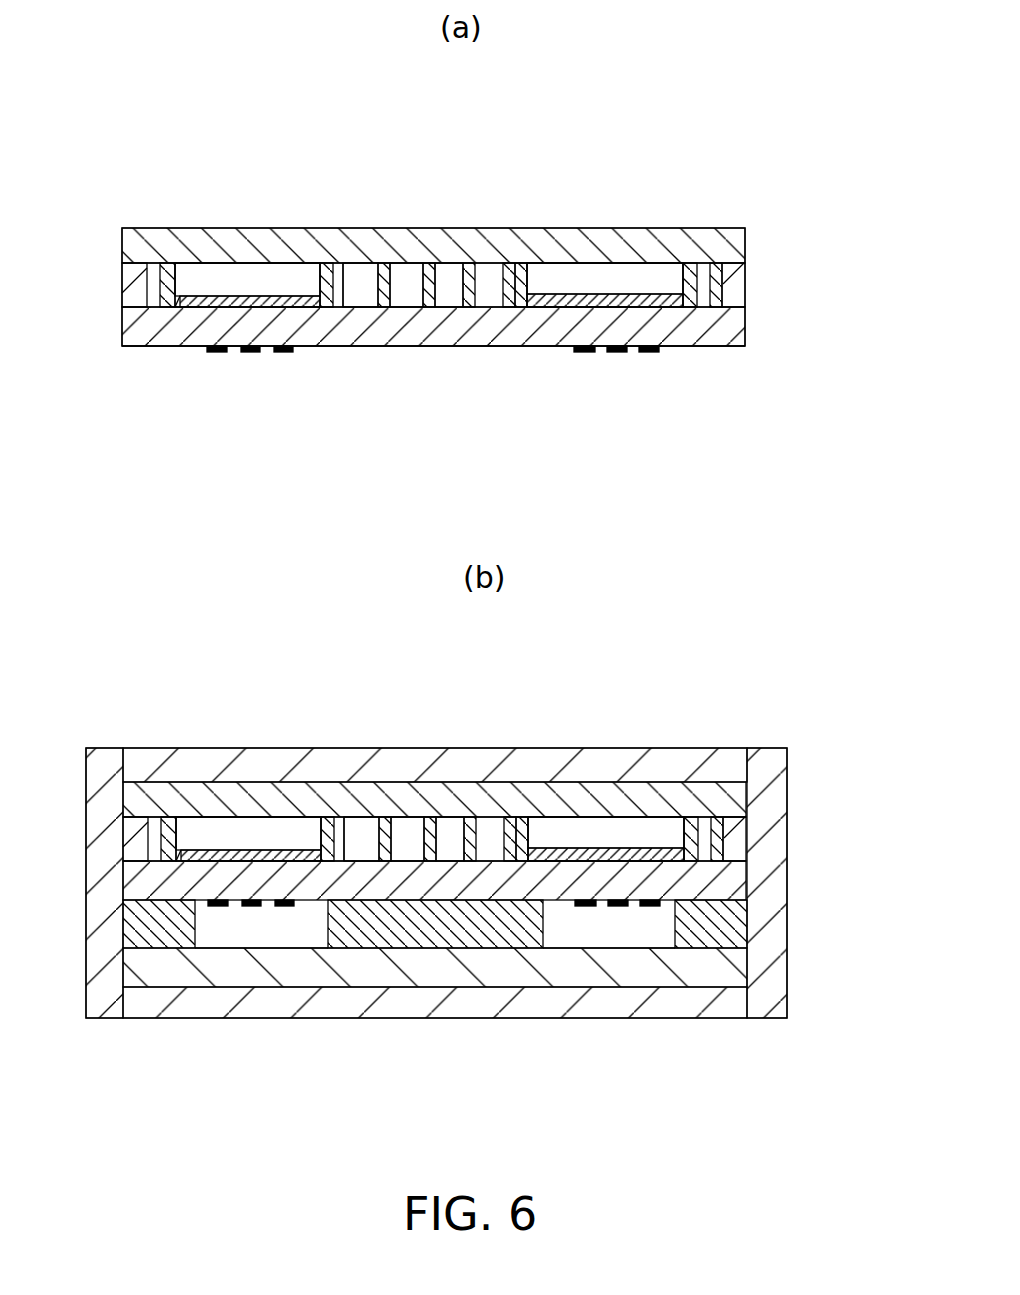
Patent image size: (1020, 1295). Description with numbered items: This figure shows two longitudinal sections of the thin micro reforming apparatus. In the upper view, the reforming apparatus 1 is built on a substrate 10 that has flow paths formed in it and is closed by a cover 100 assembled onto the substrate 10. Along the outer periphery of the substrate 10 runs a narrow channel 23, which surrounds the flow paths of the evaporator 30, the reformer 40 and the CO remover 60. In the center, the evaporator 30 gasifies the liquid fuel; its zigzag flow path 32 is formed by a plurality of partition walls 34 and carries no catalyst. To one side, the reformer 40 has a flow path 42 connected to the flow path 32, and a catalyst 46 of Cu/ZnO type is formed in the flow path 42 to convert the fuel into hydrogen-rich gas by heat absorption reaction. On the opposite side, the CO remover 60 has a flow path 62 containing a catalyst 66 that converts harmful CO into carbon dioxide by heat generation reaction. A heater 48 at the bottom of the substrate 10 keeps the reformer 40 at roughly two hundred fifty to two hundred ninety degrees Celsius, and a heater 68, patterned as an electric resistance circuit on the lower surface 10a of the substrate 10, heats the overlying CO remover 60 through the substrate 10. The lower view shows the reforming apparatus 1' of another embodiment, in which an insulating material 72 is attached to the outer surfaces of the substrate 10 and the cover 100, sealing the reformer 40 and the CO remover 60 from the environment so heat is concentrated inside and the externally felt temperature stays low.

The thin micro reforming apparatus 1 is at (433, 196).
The reforming apparatus 1' is at (436, 806).
The substrate 10 is at (735, 287).
The lower surface of the substrate 10a is at (700, 346).
The channel 23 is at (145, 277).
The evaporator 30 is at (403, 278).
The flow path of the evaporator 32 is at (352, 288).
The partition walls 34 is at (453, 288).
The reformer 40 is at (286, 280).
The flow path of the reformer 42 is at (200, 277).
The catalyst 46 is at (263, 302).
The heater 48 is at (213, 352).
The CO remover 60 is at (540, 280).
The flow path of the CO remover 62 is at (578, 277).
The catalyst 66 is at (638, 293).
The heater 68 is at (578, 352).
The insulating material 72 is at (148, 757).
The cover 100 is at (470, 245).